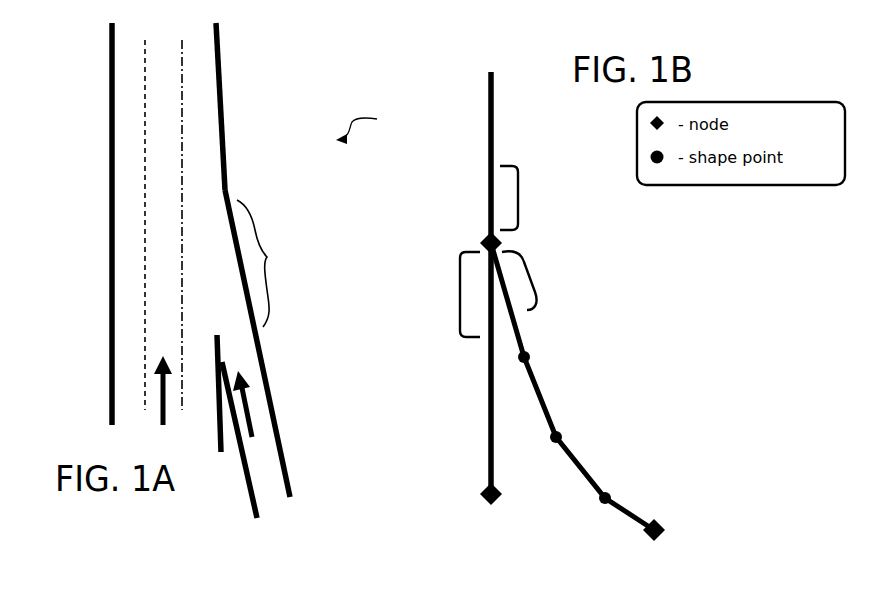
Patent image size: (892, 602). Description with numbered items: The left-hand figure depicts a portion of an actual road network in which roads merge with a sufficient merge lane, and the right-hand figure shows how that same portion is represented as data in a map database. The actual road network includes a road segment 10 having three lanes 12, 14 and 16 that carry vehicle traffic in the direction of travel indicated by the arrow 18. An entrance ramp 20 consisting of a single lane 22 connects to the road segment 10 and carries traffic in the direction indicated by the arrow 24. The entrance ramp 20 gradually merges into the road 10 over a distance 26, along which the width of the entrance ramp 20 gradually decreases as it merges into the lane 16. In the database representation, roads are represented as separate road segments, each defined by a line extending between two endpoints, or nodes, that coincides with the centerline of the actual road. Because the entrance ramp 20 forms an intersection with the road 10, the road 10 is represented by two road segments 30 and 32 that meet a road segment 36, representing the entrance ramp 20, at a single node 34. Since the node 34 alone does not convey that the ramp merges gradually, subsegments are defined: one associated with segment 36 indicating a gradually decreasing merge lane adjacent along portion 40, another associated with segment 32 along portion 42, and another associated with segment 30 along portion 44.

In FIG. 1A, the road segment 10 is at (105, 188).
In FIG. 1A, the lane 12 is at (133, 93).
In FIG. 1A, the lane 14 is at (163, 113).
In FIG. 1A, the lane 16 is at (200, 133).
In FIG. 1A, the arrow 18 is at (154, 393).
In FIG. 1A, the entrance ramp 20 is at (281, 451).
In FIG. 1A, the lane 22 is at (265, 488).
In FIG. 1A, the arrow 24 is at (262, 400).
In FIG. 1A, the distance 26 is at (270, 257).
In FIG. 1B, the road segment 30 is at (478, 163).
In FIG. 1B, the road segment 32 is at (487, 423).
In FIG. 1B, the node 34 is at (469, 235).
In FIG. 1B, the road segment 36 is at (603, 476).
In FIG. 1B, the portion 40 is at (540, 275).
In FIG. 1B, the portion 42 is at (458, 298).
In FIG. 1B, the portion 44 is at (522, 195).